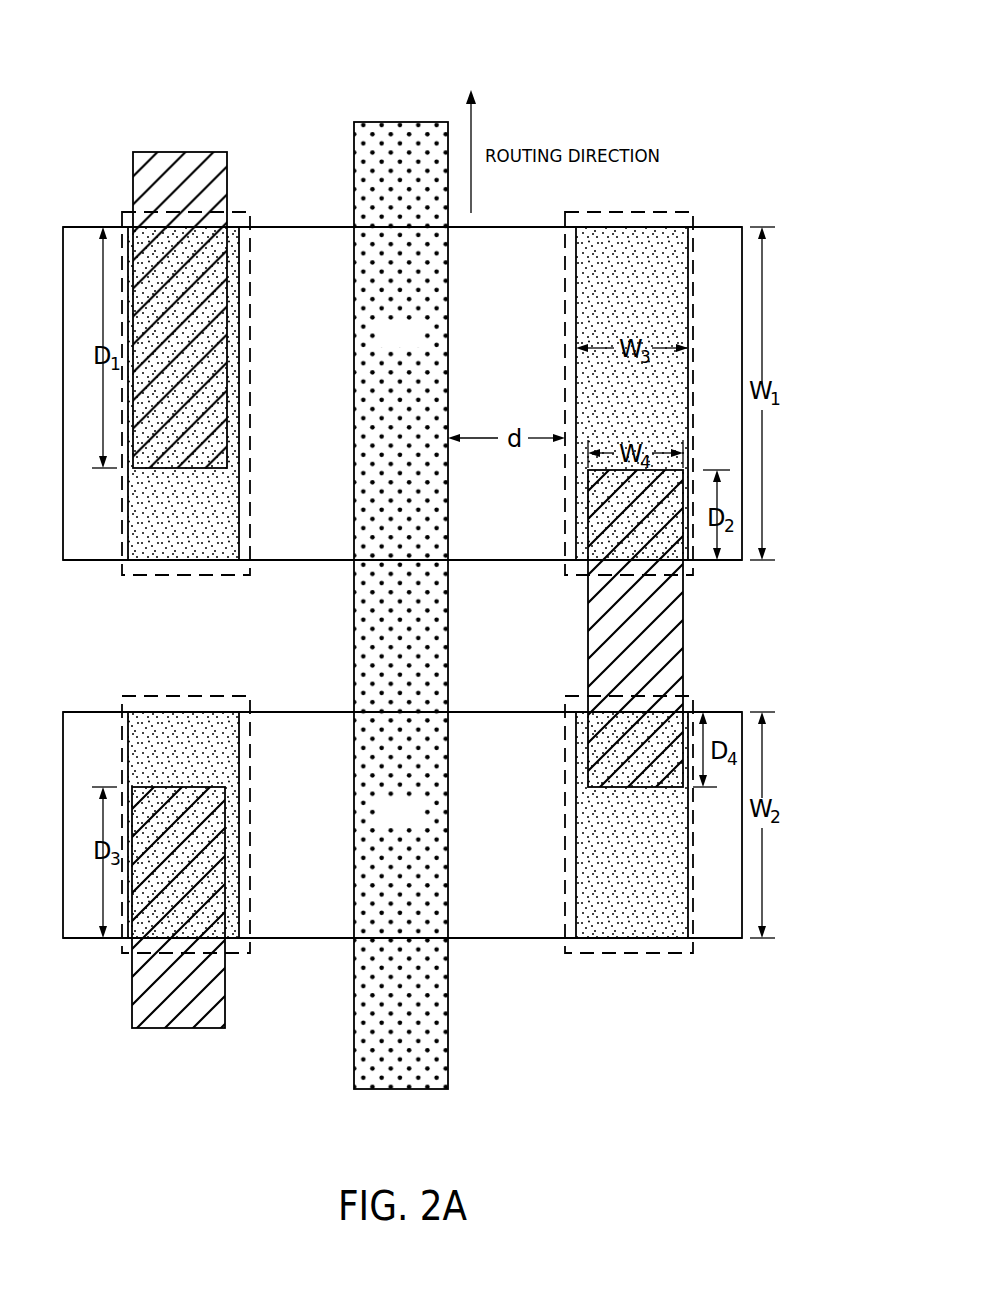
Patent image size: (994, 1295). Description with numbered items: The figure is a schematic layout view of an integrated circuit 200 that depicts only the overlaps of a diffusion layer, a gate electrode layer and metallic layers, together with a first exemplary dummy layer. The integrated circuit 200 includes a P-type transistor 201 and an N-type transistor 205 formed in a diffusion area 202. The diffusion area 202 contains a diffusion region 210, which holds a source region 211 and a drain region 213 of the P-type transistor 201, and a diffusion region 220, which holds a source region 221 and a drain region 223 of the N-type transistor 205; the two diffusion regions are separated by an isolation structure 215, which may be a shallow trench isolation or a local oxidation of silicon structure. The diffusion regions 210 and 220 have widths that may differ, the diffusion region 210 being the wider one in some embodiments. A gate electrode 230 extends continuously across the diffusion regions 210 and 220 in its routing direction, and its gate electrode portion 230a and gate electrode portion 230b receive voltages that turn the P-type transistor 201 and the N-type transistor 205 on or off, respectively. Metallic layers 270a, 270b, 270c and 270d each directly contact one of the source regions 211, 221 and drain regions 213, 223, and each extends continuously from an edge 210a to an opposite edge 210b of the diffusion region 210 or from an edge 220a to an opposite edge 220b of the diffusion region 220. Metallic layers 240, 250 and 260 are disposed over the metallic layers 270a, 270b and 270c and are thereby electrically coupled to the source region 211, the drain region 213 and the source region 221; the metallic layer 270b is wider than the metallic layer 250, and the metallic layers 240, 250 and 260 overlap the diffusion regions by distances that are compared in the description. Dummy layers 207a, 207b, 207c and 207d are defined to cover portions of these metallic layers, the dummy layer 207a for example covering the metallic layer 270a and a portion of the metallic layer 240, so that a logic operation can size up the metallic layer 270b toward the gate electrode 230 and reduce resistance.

The integrated circuit 200 is at (760, 68).
The P-type transistor 201 is at (790, 351).
The diffusion area 202 is at (752, 593).
The N-type transistor 205 is at (808, 755).
The dummy layer 207a is at (560, 575).
The dummy layer 207b is at (560, 932).
The dummy layer 207c is at (112, 577).
The dummy layer 207d is at (120, 930).
The diffusion region 210 is at (731, 563).
The edge of diffusion region 210a is at (80, 227).
The opposite edge of diffusion region 210b is at (277, 562).
The source region 211 is at (315, 387).
The drain region 213 is at (517, 387).
The isolation structure 215 is at (497, 640).
The diffusion region 220 is at (728, 711).
The edge of diffusion region 220a is at (85, 712).
The opposite edge of diffusion region 220b is at (275, 940).
The source region 221 is at (315, 834).
The drain region 223 is at (517, 834).
The gate electrode 230 is at (450, 316).
The gate electrode portion 230a is at (418, 344).
The gate electrode portion 230b is at (418, 824).
The metallic layer 240 is at (227, 455).
The metallic layer 250 is at (588, 634).
The metallic layer 260 is at (227, 1008).
The metallic layer 270a is at (233, 508).
The metallic layer 270b is at (582, 262).
The metallic layer 270c is at (230, 753).
The metallic layer 270d is at (585, 876).